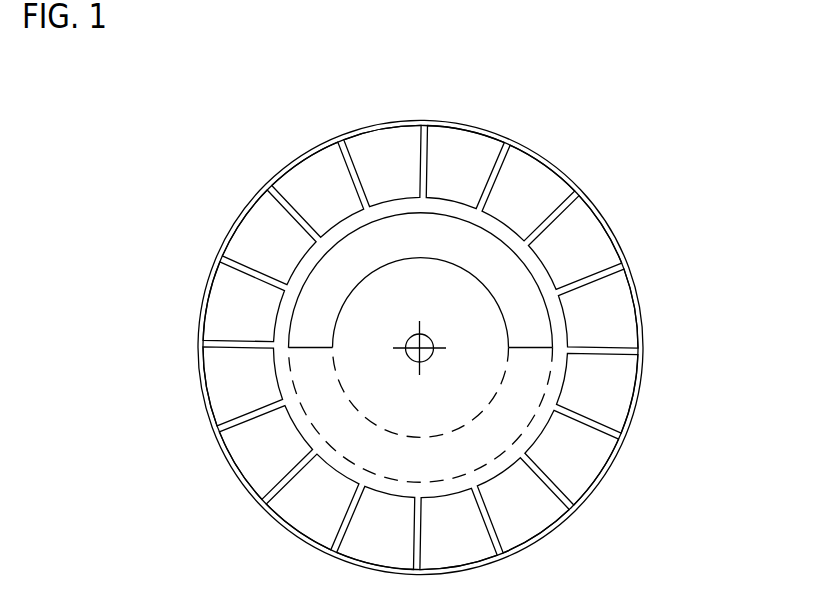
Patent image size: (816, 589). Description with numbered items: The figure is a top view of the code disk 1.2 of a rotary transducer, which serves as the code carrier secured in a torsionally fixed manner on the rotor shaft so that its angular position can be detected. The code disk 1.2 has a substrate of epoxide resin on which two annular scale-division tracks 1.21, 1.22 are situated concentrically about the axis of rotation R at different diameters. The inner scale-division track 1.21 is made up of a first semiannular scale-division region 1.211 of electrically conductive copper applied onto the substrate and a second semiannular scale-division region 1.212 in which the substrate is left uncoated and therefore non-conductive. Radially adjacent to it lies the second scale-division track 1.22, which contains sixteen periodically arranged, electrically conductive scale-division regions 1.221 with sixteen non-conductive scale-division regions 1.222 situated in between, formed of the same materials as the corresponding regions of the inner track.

The code disk 1.2 is at (243, 517).
The inner scale-division track 1.21 is at (413, 307).
The first semiannular scale-division region 1.211 is at (480, 245).
The second semiannular scale-division region 1.212 is at (313, 415).
The second scale-division track 1.22 is at (440, 322).
The electrically conductive scale-division region 1.221 is at (386, 153).
The non-conductive scale-division region 1.222 is at (340, 135).
The axis of rotation R is at (413, 350).